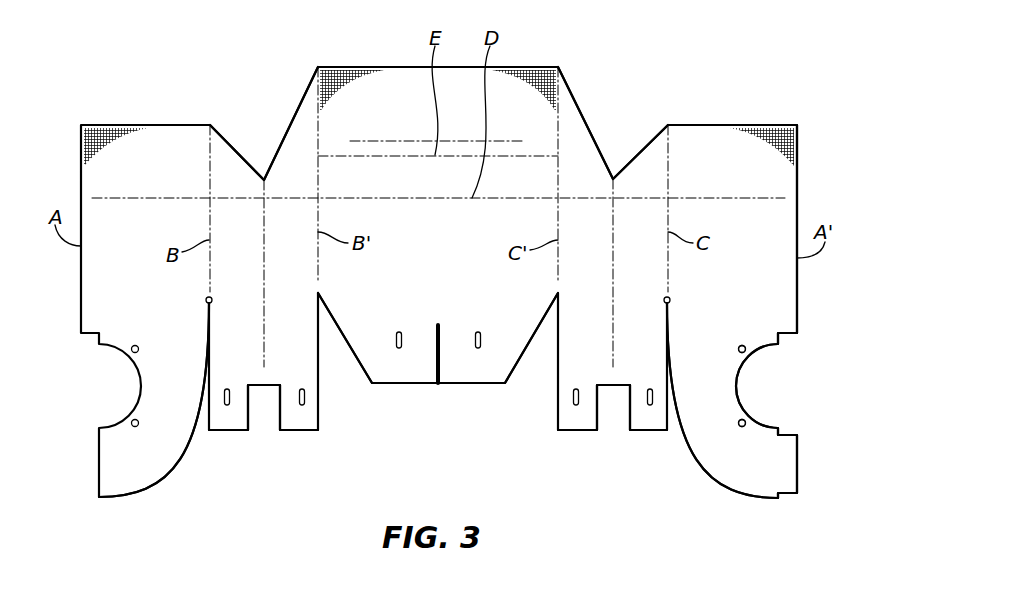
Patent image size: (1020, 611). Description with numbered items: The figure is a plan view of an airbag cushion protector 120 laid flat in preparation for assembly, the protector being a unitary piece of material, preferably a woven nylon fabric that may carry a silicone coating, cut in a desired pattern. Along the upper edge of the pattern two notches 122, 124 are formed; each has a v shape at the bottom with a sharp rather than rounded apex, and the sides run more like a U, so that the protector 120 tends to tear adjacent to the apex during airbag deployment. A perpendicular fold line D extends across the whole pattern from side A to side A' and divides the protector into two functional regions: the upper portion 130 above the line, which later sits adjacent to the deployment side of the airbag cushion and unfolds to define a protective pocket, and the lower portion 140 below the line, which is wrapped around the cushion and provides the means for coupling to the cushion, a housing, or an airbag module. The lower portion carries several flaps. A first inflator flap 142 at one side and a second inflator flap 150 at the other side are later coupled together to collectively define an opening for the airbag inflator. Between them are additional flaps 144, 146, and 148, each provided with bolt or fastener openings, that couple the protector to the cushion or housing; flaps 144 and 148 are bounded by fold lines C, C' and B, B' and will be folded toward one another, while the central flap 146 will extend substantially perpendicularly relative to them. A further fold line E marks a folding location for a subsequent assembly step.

The airbag cushion protector 120 is at (725, 88).
The notch 122 is at (613, 140).
The notch 124 is at (257, 142).
The upper portion 130 is at (802, 135).
The lower portion 140 is at (803, 307).
The first inflator flap 142 is at (733, 465).
The flap 144 is at (613, 355).
The flap 146 is at (438, 392).
The flap 148 is at (264, 355).
The second inflator flap 150 is at (143, 465).